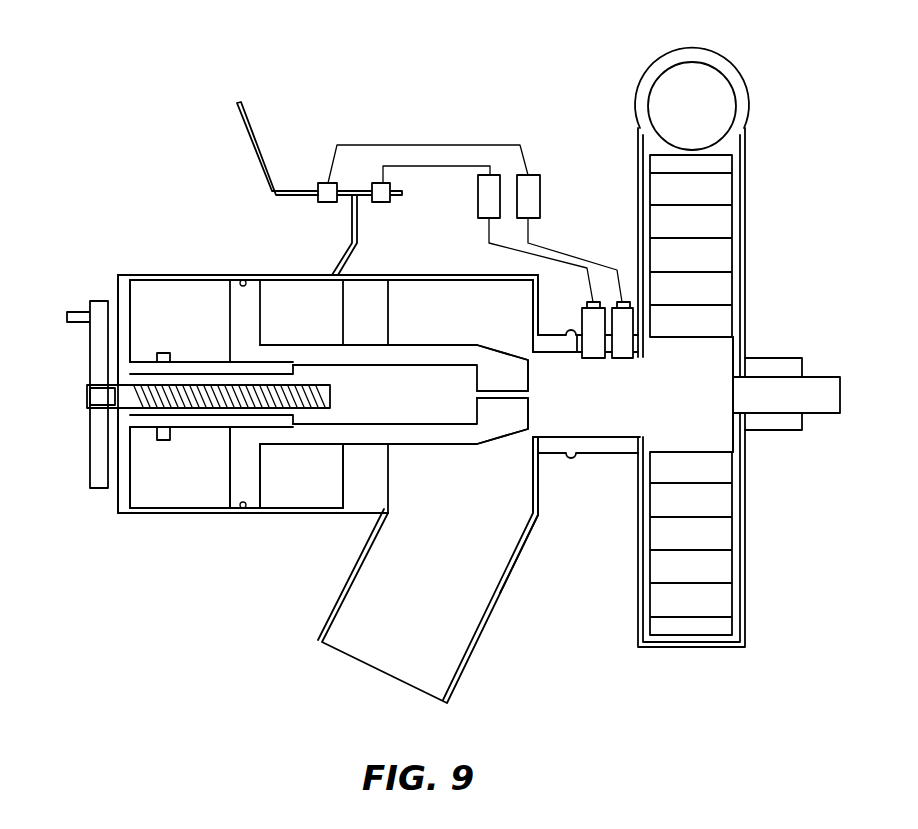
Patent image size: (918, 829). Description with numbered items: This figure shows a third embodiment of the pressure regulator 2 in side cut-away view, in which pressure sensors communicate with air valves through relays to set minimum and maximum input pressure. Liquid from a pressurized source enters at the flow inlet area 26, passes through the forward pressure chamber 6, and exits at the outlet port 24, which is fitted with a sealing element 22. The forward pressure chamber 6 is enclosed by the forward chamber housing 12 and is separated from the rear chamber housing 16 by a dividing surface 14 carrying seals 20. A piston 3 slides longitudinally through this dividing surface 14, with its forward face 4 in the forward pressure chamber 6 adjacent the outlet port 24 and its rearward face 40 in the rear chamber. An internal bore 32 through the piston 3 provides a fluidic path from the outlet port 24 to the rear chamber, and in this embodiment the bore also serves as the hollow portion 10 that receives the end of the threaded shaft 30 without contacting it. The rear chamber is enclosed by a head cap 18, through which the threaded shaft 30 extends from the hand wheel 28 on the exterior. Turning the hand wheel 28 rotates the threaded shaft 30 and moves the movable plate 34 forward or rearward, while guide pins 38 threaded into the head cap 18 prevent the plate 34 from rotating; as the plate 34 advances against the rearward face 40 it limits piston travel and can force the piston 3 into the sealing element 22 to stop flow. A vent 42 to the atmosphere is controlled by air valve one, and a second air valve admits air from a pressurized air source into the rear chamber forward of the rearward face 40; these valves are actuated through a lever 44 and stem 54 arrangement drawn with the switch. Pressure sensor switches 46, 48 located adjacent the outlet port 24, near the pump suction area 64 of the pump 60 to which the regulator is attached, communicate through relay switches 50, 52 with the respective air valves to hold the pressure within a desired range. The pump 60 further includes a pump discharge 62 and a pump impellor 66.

The pressure regulator 2 is at (116, 147).
The piston 3 is at (248, 440).
The forward face of the piston 4 is at (533, 517).
The forward pressure chamber 6 is at (407, 300).
The hollow portion of the piston 10 is at (363, 413).
The forward chamber housing 12 is at (433, 276).
The dividing surface 14 is at (360, 500).
The rear chamber housing 16 is at (237, 274).
The head cap 18 is at (123, 287).
The seals 20 is at (363, 343).
The sealing element 22 is at (538, 352).
The outlet port 24 is at (582, 398).
The flow inlet area 26 is at (398, 651).
The hand wheel 28 is at (98, 338).
The threaded shaft 30 is at (133, 400).
The internal bore 32 is at (523, 390).
The movable plate 34 is at (163, 443).
The guide pins 38 is at (147, 368).
The rearward face of the piston 40 is at (242, 328).
The vent 42 is at (393, 190).
The trigger lever 44 is at (254, 136).
The second pressure sensor switch 46 is at (595, 302).
The first pressure sensor switch 48 is at (625, 302).
The relay switch 50 is at (497, 175).
The relay switch 52 is at (532, 175).
The lever stem 54 is at (340, 268).
The pump 60 is at (747, 257).
The pump discharge 62 is at (690, 70).
The pump suction area 64 is at (697, 367).
The pump impellor 66 is at (722, 521).